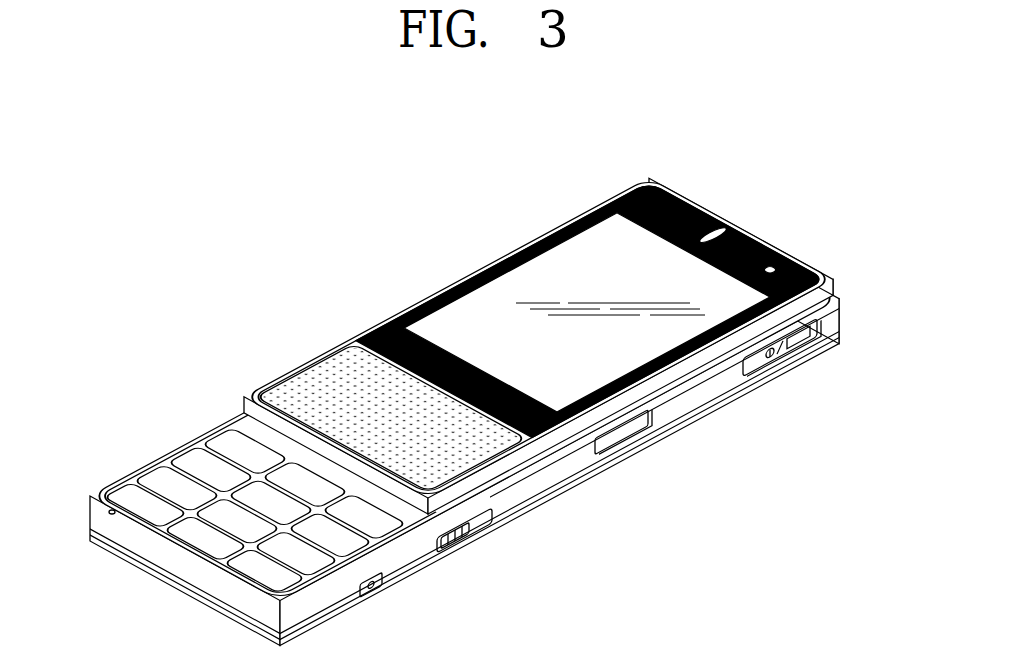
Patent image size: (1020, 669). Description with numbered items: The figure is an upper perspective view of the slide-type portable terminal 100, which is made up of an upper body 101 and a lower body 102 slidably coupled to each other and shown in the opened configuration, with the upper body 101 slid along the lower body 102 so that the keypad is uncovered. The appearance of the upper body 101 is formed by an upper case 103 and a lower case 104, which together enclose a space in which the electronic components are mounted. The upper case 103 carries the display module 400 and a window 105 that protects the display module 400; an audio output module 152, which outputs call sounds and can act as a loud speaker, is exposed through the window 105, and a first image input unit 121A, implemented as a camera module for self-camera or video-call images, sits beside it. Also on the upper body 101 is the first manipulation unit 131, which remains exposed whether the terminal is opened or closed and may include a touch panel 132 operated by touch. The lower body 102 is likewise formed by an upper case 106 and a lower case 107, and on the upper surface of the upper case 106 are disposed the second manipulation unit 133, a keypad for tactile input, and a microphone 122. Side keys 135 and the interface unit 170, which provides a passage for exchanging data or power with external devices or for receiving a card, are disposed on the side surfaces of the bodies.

The portable terminal 100 is at (469, 396).
The upper body 101 is at (563, 330).
The lower body 102 is at (469, 419).
The upper case 103 is at (835, 283).
The lower case 104 is at (840, 299).
The window 105 is at (673, 200).
The upper case 106 is at (570, 468).
The lower case 107 is at (514, 524).
The first image input unit 121A is at (776, 267).
The microphone 122 is at (109, 513).
The first manipulation unit 131 is at (331, 357).
The touch panel 132 is at (300, 396).
The second manipulation unit 133 is at (225, 437).
The side keys 135 is at (386, 590).
The audio output module 152 is at (722, 234).
The interface unit 170 is at (797, 342).
The display module 400 is at (545, 262).